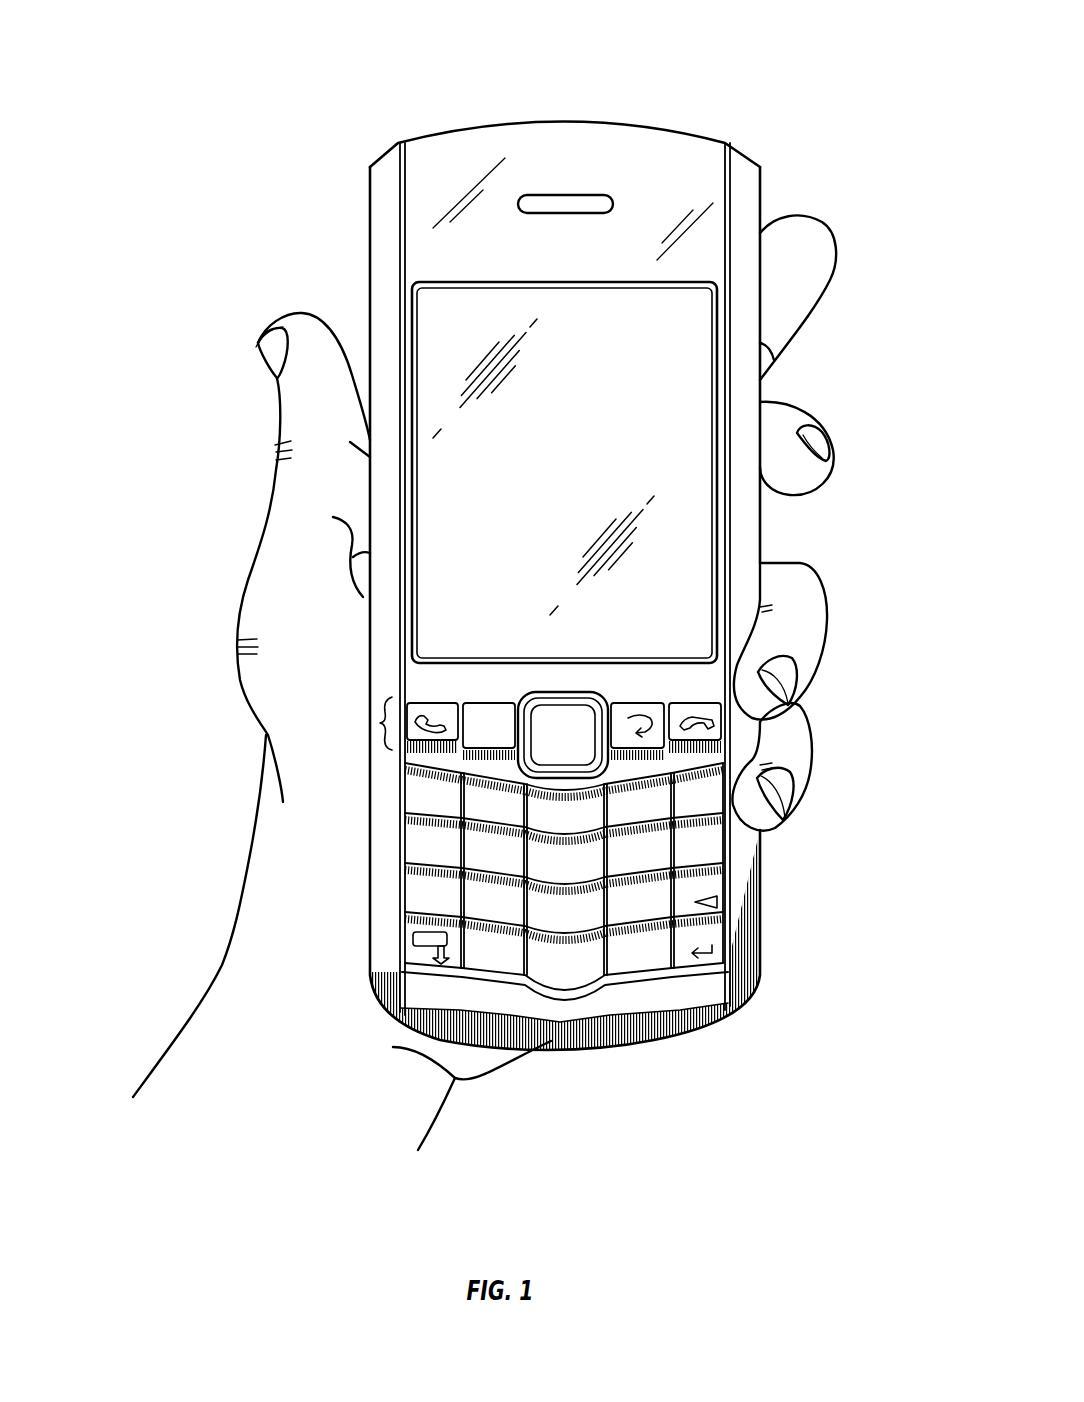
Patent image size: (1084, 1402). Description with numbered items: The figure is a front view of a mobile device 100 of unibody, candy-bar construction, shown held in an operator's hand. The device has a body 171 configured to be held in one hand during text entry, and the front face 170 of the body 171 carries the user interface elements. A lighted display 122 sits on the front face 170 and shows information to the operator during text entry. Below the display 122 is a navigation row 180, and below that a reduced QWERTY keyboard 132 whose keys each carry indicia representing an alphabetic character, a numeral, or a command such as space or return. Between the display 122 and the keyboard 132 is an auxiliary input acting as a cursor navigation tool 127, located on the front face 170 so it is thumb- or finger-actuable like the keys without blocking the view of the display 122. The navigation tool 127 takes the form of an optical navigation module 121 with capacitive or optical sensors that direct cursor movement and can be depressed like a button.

The mobile device 100 is at (711, 57).
The optical navigation module 121 is at (559, 732).
The display 122 is at (441, 324).
The navigation tool 127 is at (592, 784).
The keyboard 132 is at (579, 1015).
The front face 170 is at (748, 198).
The body 171 is at (362, 171).
The navigation row 180 is at (381, 714).